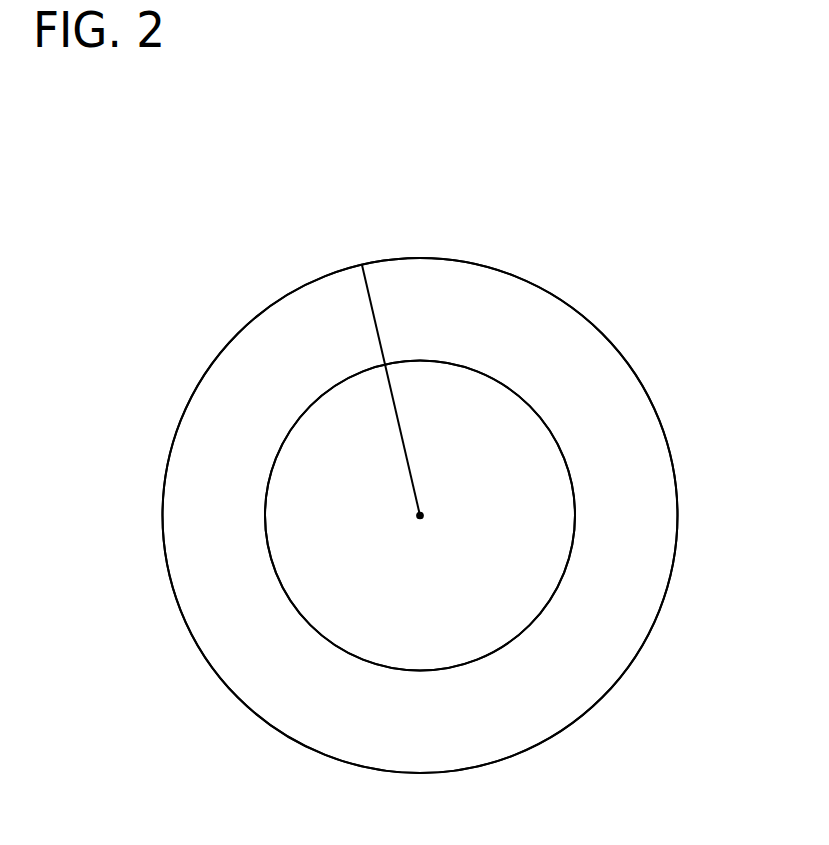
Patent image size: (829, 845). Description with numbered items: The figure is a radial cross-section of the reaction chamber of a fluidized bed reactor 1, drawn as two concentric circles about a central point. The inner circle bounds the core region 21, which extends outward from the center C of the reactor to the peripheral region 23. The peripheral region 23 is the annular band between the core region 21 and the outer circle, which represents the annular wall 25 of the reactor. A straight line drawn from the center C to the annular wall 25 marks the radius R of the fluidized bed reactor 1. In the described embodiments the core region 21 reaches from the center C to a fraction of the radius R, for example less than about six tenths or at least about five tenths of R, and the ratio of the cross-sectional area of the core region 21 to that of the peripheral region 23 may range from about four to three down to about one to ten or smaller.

The fluidized bed reactor 1 is at (183, 247).
The core region 21 is at (502, 455).
The peripheral region 23 is at (605, 623).
The annular wall 25 is at (553, 292).
The radius R is at (368, 290).
The center C is at (420, 516).